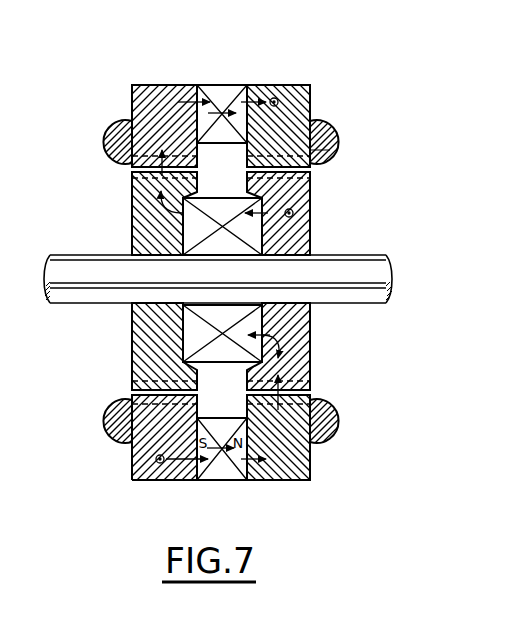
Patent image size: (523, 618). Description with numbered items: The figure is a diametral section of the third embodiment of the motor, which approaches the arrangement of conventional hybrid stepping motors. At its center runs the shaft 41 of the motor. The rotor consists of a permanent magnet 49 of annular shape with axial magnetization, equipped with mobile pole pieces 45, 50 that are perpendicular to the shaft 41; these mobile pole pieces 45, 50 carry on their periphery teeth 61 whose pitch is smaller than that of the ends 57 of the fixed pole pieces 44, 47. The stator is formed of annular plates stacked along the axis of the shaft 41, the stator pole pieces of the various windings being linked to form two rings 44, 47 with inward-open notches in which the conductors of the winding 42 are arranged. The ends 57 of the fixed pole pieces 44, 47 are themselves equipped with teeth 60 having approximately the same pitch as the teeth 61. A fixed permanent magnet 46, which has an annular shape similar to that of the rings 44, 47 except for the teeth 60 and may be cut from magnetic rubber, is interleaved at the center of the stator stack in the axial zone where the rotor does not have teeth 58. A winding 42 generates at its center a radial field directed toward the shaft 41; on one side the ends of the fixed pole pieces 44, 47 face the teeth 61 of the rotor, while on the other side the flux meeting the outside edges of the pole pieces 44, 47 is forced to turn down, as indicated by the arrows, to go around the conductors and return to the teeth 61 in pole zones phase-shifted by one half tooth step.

The shaft 41 is at (83, 282).
The winding 42 is at (325, 132).
The fixed pole piece 44 is at (298, 107).
The mobile pole piece 45 is at (305, 228).
The fixed permanent magnet 46 is at (226, 95).
The fixed pole piece 47 is at (157, 90).
The permanent magnet 49 is at (232, 243).
The mobile pole piece 50 is at (148, 218).
The end of fixed pole piece 57 is at (313, 147).
The teeth 58 is at (292, 188).
The teeth 60 is at (296, 147).
The teeth 61 is at (145, 176).